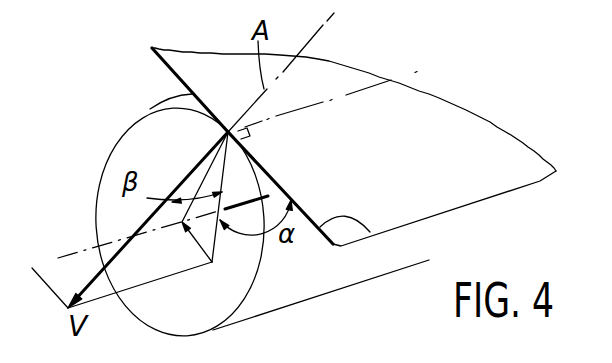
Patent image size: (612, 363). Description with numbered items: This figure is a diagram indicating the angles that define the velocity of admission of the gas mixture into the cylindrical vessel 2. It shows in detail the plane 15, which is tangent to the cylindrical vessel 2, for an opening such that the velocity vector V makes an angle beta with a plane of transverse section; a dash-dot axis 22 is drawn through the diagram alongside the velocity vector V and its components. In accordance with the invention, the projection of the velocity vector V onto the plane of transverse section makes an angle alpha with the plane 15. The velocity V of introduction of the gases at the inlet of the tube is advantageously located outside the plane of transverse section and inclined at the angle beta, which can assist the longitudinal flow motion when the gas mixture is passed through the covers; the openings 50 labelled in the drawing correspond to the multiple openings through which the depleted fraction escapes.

The cylindrical vessel 2 is at (297, 303).
The plane 15 is at (343, 226).
The axis of rotation of the disc 22 is at (62, 257).
The openings 50 is at (157, 106).